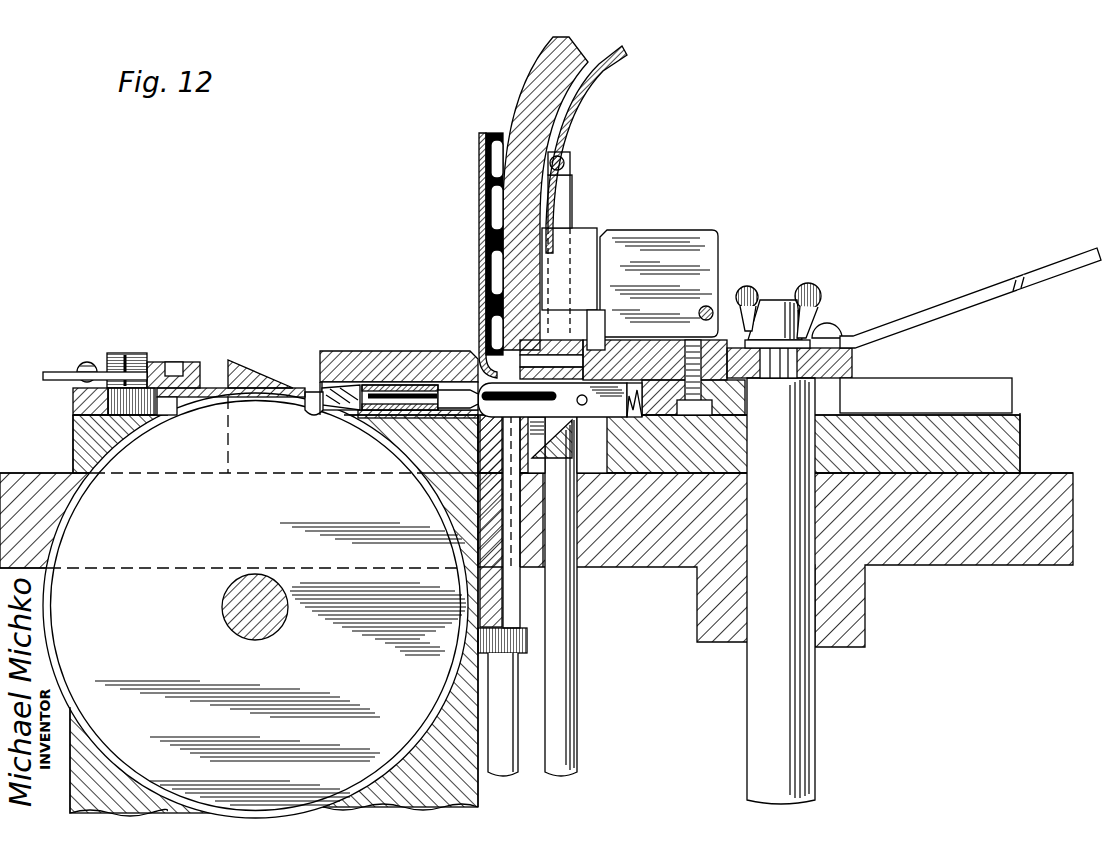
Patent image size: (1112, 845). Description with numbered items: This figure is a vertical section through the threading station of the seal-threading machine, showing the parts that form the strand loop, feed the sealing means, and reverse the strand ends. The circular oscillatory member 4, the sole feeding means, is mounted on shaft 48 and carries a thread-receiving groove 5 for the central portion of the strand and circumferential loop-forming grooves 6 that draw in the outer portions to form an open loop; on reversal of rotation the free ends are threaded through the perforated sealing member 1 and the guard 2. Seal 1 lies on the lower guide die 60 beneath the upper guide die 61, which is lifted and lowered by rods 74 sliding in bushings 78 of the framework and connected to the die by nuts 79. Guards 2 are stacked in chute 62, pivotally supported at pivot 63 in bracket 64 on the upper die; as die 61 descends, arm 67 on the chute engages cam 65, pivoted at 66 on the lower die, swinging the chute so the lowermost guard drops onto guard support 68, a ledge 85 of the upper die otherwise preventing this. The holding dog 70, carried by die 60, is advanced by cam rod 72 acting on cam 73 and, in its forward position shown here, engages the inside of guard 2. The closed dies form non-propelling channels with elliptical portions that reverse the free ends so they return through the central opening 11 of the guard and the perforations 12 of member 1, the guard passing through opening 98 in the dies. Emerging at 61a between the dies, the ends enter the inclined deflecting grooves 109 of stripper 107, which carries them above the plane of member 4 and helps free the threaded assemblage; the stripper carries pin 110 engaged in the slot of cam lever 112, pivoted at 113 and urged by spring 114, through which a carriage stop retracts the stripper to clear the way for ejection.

The perforated sealing member 1 is at (372, 383).
The gripping and severing member or guard 2 is at (485, 185).
The circular oscillatory member 4 is at (255, 605).
The thread-receiving groove 5 is at (312, 402).
The circumferential loop-forming grooves 6 is at (164, 421).
The central opening 11 is at (478, 266).
The perforations 12 is at (383, 397).
The shaft 48 is at (222, 607).
The lower guide die 60 is at (930, 395).
The upper guide die 61 is at (838, 350).
The location between upper and lower guide dies 61a is at (326, 390).
The chute 62 is at (553, 112).
The pivot 63 is at (565, 161).
The bracket 64 is at (566, 192).
The cam 65 is at (690, 233).
The pivot 66 is at (710, 306).
The arm 67 is at (592, 228).
The guard support 68 is at (478, 517).
The holding dog 70 is at (580, 417).
The cam rod 72 is at (562, 638).
The cam 73 is at (532, 460).
The rods 74 is at (746, 712).
The bushings 78 is at (853, 627).
The nuts 79 is at (810, 285).
The ledge 85 is at (533, 370).
The opening 98 is at (478, 337).
The stripper 107 is at (208, 386).
The inclined deflecting grooves 109 is at (250, 382).
The pin 110 is at (175, 362).
The cam lever 112 is at (150, 362).
The pivot 113 is at (114, 355).
The spring 114 is at (46, 380).